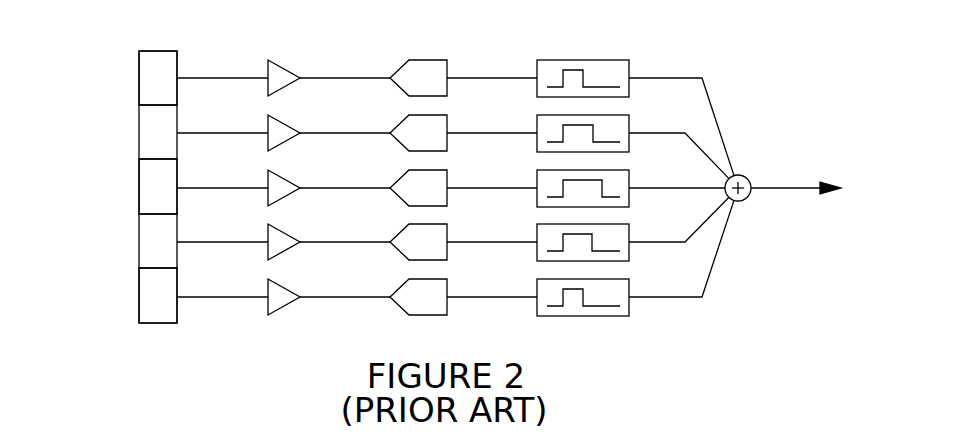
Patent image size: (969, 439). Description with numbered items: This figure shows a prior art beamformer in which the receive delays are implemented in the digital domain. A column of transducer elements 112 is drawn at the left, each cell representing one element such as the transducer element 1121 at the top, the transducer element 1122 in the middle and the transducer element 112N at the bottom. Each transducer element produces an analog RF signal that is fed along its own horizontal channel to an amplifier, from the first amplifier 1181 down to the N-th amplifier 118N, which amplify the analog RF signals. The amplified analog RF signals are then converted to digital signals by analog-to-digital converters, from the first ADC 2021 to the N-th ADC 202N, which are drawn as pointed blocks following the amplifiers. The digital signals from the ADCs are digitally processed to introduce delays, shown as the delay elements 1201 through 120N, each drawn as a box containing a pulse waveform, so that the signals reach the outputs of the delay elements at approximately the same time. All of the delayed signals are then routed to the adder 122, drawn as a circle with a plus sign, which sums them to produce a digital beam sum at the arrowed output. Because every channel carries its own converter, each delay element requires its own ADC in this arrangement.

The transducer elements 112 is at (157, 50).
The transducer element 1121 is at (139, 77).
The transducer element 1122 is at (139, 187).
The transducer element 112N is at (139, 299).
The amplifier 1181 is at (268, 58).
The amplifier 118N is at (268, 315).
The analog-to-digital converter 2021 is at (426, 60).
The analog-to-digital converter 202N is at (417, 317).
The delay element 1201 is at (582, 60).
The delay element 120N is at (580, 318).
The adder 122 is at (749, 177).